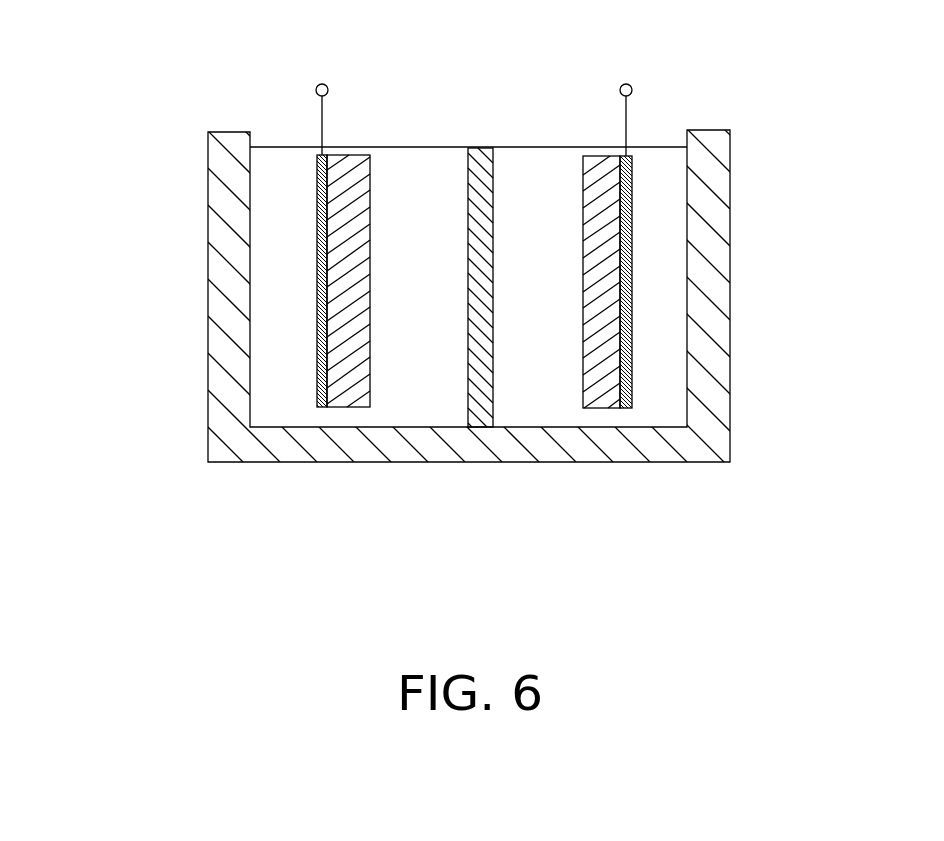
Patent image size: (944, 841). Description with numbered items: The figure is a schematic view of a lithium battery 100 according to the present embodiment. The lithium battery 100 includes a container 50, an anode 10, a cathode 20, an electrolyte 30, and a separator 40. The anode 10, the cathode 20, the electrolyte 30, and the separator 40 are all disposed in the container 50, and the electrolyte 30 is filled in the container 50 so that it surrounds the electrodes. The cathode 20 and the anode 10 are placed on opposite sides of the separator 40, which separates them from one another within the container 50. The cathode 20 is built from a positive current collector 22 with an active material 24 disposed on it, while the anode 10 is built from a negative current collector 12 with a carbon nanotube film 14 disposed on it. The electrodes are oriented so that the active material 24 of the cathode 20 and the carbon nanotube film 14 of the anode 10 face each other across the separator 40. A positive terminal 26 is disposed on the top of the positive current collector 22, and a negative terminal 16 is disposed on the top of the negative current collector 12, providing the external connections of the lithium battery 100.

The lithium battery 100 is at (436, 45).
The container 50 is at (233, 217).
The electrolyte 30 is at (545, 403).
The separator 40 is at (473, 178).
The cathode 20 is at (215, 281).
The positive current collector 22 is at (323, 338).
The active material 24 is at (338, 298).
The positive terminal 26 is at (328, 99).
The anode 10 is at (716, 282).
The negative current collector 12 is at (625, 297).
The carbon nanotube film 14 is at (603, 243).
The negative terminal 16 is at (626, 99).